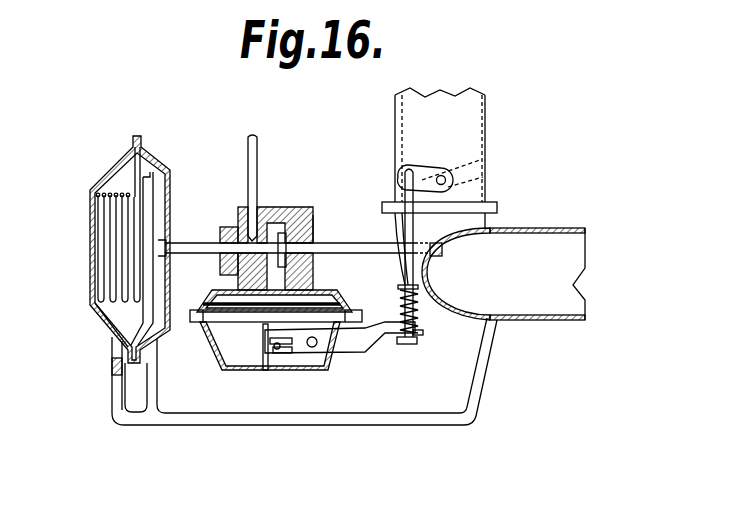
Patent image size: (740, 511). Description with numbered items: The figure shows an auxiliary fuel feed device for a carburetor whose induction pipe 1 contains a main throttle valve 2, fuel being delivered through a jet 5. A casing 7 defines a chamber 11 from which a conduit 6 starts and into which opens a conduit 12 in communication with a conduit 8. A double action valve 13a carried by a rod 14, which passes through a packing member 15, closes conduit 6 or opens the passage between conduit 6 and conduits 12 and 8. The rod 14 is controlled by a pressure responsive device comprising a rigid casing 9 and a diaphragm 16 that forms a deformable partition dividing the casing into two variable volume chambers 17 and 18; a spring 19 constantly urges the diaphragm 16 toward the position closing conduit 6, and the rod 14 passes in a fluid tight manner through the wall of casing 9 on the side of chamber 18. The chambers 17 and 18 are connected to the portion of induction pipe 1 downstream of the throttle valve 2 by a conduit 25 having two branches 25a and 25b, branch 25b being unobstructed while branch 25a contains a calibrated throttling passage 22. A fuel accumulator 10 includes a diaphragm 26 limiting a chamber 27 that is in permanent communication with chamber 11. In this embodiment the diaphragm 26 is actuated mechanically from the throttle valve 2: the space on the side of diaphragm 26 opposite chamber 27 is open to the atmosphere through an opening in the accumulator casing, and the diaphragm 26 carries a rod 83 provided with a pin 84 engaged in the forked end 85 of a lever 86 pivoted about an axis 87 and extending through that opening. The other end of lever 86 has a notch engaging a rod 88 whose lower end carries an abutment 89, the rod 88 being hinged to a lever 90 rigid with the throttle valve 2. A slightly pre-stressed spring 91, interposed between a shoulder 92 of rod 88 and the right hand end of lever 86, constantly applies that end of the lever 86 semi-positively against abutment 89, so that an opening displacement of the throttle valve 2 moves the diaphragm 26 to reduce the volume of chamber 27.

The induction pipe 1 is at (548, 248).
The main throttle valve 2 is at (481, 161).
The jet 5 is at (443, 252).
The conduit 6 is at (352, 252).
The casing 7 is at (304, 217).
The conduit 8 is at (258, 150).
The rigid casing 9 is at (90, 258).
The accumulator 10 is at (220, 366).
The chamber 11 is at (281, 230).
The conduit 12 is at (236, 265).
The valve 13a is at (314, 224).
The rod 14 is at (190, 244).
The packing member 15 is at (226, 227).
The diaphragm 16 is at (141, 166).
The chamber 17 is at (128, 173).
The chamber 18 is at (161, 182).
The spring 19 is at (118, 300).
The calibrated throttling passage 22 is at (113, 368).
The conduit 25 is at (343, 420).
The branch 25a is at (115, 344).
The branch 25b is at (157, 389).
The diaphragm 26 is at (226, 326).
The chamber 27 is at (336, 307).
The rod 83 is at (265, 355).
The pin 84 is at (278, 358).
The forked end 85 is at (282, 352).
The lever 86 is at (367, 339).
The axis 87 is at (318, 348).
The rod 88 is at (402, 314).
The abutment 89 is at (413, 343).
The lever 90 is at (422, 168).
The spring 91 is at (414, 316).
The shoulder 92 is at (402, 286).